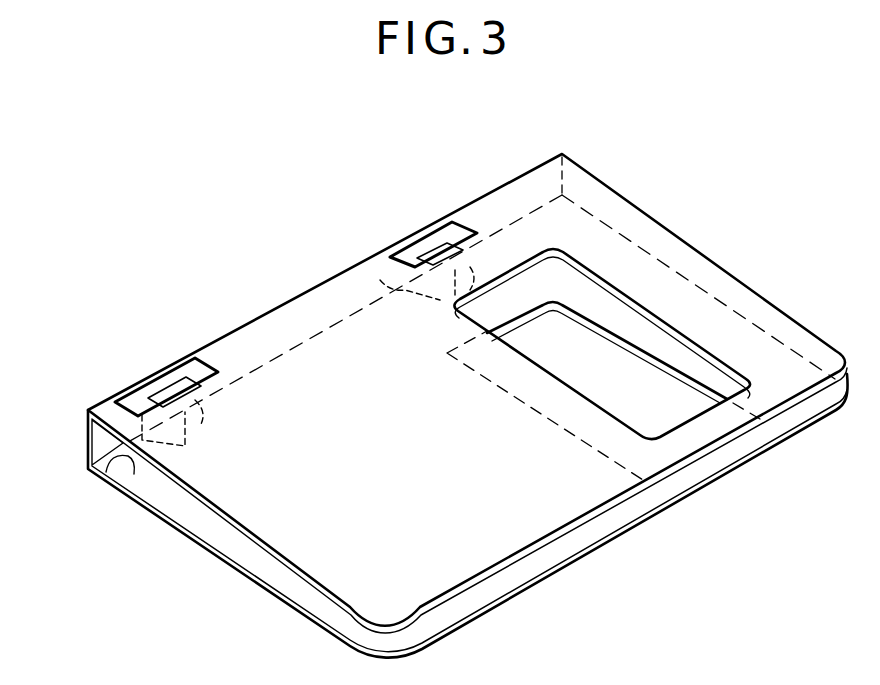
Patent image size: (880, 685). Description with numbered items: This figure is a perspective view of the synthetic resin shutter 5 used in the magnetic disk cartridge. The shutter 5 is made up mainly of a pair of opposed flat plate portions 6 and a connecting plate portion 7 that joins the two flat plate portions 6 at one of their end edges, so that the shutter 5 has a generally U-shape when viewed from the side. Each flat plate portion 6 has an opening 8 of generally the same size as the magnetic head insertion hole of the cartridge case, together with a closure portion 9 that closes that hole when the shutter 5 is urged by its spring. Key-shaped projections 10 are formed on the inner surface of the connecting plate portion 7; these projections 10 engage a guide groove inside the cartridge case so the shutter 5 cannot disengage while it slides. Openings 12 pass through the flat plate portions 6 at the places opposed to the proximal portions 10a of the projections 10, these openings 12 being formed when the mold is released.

The synthetic resin shutter 5 is at (624, 153).
The flat plate portions 6 is at (234, 546).
The connecting plate portion 7 is at (88, 437).
The opening 8 is at (607, 283).
The closure portion 9 is at (479, 556).
The key-shaped projections 10 is at (216, 409).
The proximal portions 10a is at (395, 252).
The openings 12 is at (452, 226).